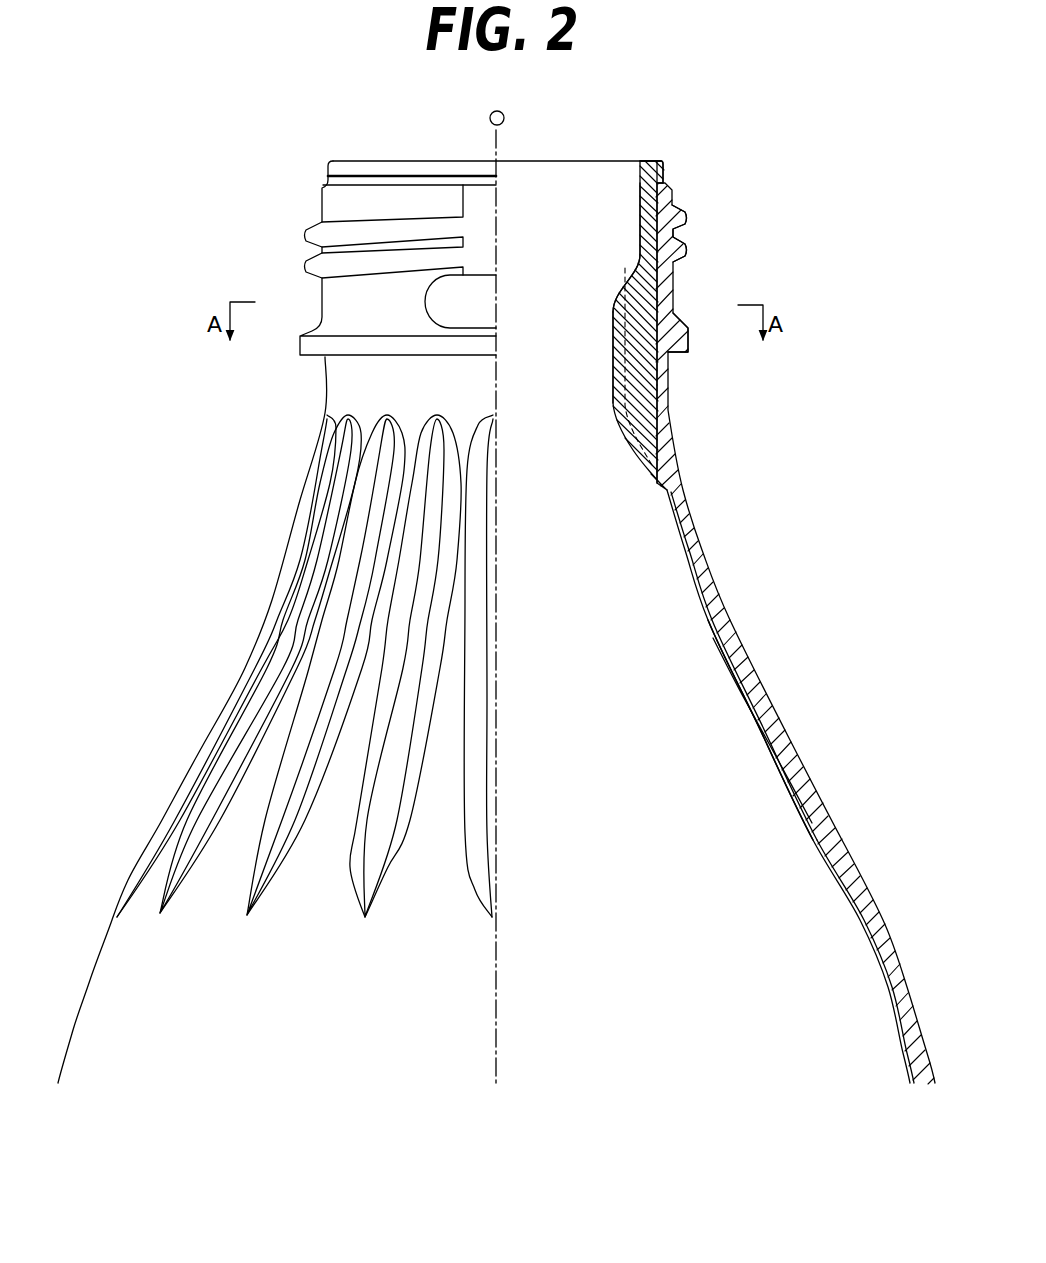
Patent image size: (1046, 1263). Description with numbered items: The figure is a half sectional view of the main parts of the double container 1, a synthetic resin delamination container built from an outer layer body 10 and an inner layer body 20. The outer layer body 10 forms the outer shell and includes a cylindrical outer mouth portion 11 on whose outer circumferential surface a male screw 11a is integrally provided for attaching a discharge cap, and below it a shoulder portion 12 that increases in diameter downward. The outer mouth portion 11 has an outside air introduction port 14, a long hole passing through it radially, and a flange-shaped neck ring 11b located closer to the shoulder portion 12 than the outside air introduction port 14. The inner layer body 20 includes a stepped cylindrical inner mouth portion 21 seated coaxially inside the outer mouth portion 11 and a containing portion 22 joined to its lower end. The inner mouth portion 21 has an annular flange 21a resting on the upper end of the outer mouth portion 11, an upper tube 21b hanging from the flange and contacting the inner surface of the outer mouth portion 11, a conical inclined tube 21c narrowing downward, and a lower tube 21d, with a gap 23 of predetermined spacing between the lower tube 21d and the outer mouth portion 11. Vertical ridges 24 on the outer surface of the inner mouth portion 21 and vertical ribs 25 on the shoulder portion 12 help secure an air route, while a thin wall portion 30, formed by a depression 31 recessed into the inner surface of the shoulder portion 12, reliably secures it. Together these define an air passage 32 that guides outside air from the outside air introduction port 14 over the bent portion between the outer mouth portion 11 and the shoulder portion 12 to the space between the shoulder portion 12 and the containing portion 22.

The double container 1 is at (803, 115).
The outer layer body 10 is at (860, 857).
The outer mouth portion 11 is at (678, 282).
The male screw 11a is at (686, 216).
The neck ring 11b is at (683, 348).
The shoulder portion 12 is at (816, 787).
The outside air introduction port 14 is at (421, 297).
The inner layer body 20 is at (833, 877).
The inner mouth portion 21 is at (636, 189).
The flange 21a is at (658, 161).
The upper tube 21b is at (639, 210).
The inclined tube 21c is at (631, 262).
The lower tube 21d is at (615, 358).
The containing portion 22 is at (866, 949).
The gap 23 is at (660, 386).
The ridge 24 is at (636, 321).
The rib 25 is at (389, 806).
The thin wall portion 30 is at (738, 657).
The depression 31 is at (722, 653).
The air passage 32 is at (727, 434).